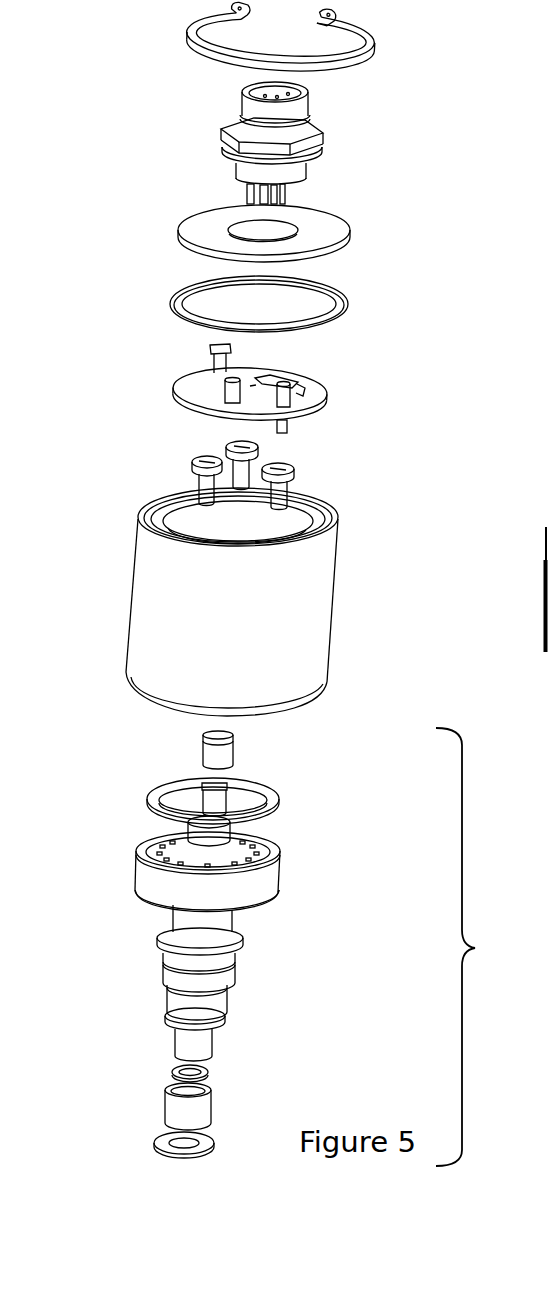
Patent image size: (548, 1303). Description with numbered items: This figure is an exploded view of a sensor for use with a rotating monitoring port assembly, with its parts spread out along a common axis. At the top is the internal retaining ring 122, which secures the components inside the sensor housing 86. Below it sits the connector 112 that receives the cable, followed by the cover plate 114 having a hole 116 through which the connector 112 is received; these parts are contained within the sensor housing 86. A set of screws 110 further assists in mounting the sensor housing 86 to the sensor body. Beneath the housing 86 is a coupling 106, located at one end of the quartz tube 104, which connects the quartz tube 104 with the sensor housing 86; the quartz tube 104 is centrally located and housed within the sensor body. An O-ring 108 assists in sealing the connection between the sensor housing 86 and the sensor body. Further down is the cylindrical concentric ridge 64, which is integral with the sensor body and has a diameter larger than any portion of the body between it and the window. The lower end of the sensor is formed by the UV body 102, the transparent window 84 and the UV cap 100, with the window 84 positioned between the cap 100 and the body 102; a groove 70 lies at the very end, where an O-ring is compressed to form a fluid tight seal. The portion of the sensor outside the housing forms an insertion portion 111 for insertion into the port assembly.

The internal retaining ring 122 is at (190, 44).
The connector 112 is at (232, 83).
The cover plate 114 is at (230, 233).
The hole 116 is at (300, 233).
The screws 110 is at (258, 443).
The sensor housing 86 is at (300, 632).
The coupling 106 is at (228, 772).
The quartz tube 104 is at (228, 784).
The O-ring 108 is at (177, 783).
The cylindrical concentric ridge 64 is at (245, 950).
The UV body 102 is at (178, 1054).
The transparent window 84 is at (208, 1073).
The UV cap 100 is at (168, 1122).
The groove 70 is at (158, 1148).
The insertion portion 111 is at (483, 947).